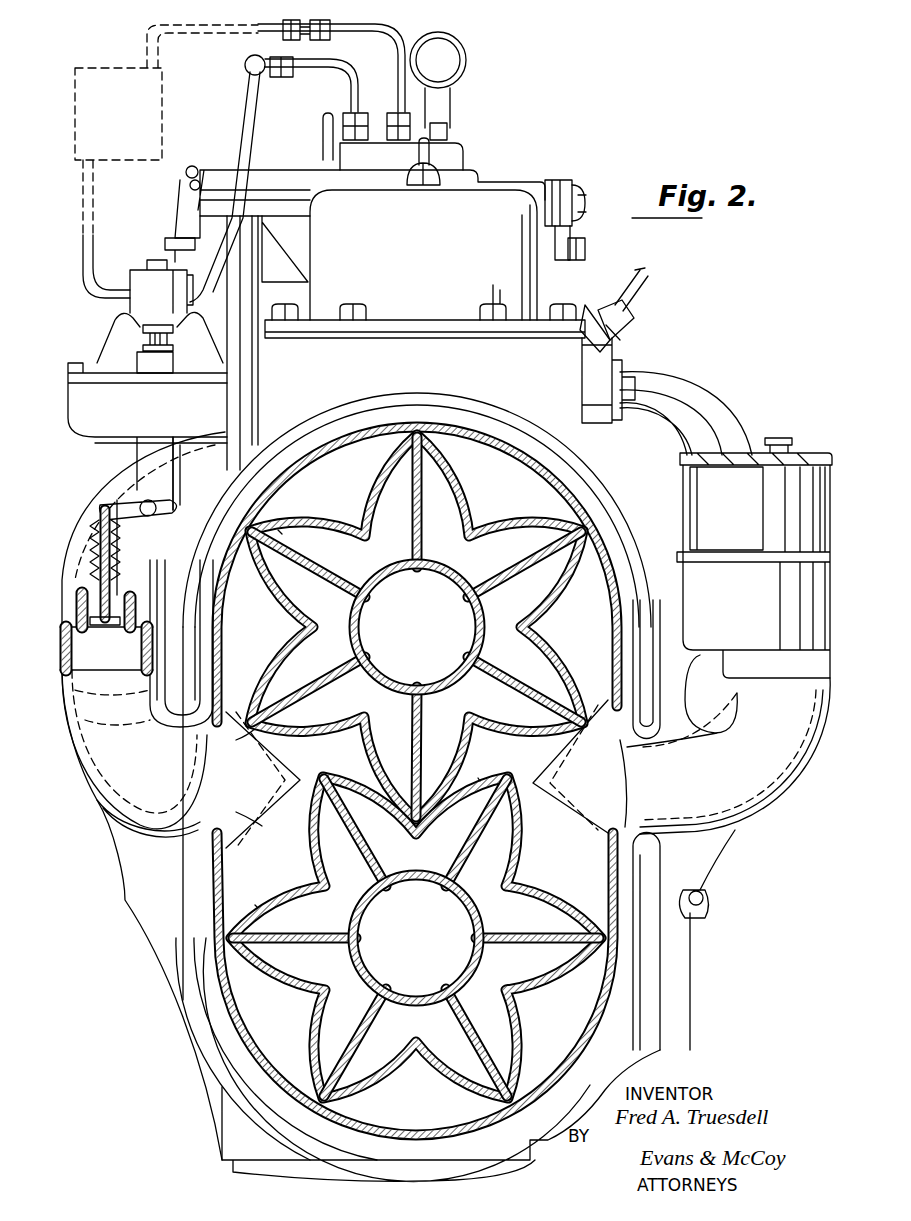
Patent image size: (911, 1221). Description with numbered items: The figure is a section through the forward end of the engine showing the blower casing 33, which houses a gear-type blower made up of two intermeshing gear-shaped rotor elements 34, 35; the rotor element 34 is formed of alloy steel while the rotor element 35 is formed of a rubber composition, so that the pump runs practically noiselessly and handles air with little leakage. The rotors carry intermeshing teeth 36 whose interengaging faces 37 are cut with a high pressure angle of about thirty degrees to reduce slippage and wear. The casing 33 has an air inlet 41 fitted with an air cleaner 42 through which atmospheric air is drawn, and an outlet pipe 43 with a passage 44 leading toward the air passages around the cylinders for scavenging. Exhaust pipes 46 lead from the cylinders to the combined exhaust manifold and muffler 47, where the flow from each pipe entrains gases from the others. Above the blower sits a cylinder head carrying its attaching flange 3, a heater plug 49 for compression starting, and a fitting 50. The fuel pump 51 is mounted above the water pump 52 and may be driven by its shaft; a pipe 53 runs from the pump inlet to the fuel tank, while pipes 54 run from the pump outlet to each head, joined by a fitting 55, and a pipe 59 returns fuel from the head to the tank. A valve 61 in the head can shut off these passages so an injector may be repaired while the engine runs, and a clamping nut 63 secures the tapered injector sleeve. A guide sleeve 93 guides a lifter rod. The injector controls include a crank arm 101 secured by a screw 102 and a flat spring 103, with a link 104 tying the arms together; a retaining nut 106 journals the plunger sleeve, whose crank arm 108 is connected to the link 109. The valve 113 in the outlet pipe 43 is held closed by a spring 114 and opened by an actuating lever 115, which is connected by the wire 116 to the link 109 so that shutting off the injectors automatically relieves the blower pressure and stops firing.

The attaching flange 3 is at (588, 328).
The blower casing 33 is at (615, 988).
The rotor element 34 is at (465, 832).
The rotor element 35 is at (425, 520).
The intermeshing teeth 36 is at (278, 530).
The interengaging faces 37 is at (478, 778).
The air inlet 41 is at (760, 790).
The air cleaner 42 is at (797, 455).
The outlet pipe 43 is at (123, 790).
The passage 44 is at (118, 500).
The exhaust pipe 46 is at (690, 392).
The combined exhaust manifold and muffler 47 is at (718, 708).
The heater plug 49 is at (445, 160).
The fitting 50 is at (620, 330).
The fuel pump 51 is at (128, 300).
The water pump 52 is at (92, 416).
The pipe 53 is at (103, 225).
The pipe 54 is at (238, 145).
The fitting 55 is at (352, 115).
The pipe 59 is at (395, 75).
The valve 61 is at (322, 135).
The clamping nut 63 is at (553, 180).
The guide sleeve 93 is at (270, 370).
The crank arm 101 is at (575, 235).
The screw 102 is at (585, 210).
The flat spring 103 is at (585, 195).
The link 104 is at (582, 262).
The retaining nut 106 is at (203, 178).
The crank arm 108 is at (185, 205).
The link 109 is at (175, 238).
The valve 113 is at (136, 657).
The spring 114 is at (115, 575).
The actuating lever 115 is at (118, 530).
The wire 116 is at (178, 490).